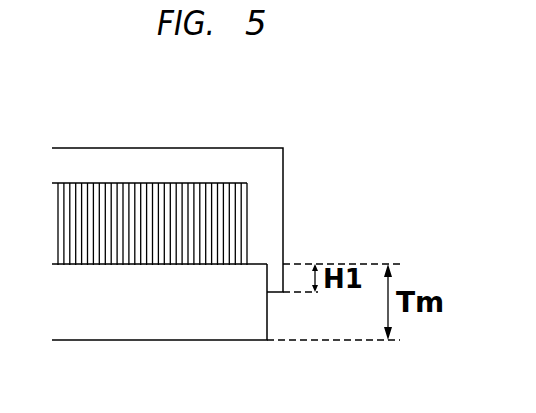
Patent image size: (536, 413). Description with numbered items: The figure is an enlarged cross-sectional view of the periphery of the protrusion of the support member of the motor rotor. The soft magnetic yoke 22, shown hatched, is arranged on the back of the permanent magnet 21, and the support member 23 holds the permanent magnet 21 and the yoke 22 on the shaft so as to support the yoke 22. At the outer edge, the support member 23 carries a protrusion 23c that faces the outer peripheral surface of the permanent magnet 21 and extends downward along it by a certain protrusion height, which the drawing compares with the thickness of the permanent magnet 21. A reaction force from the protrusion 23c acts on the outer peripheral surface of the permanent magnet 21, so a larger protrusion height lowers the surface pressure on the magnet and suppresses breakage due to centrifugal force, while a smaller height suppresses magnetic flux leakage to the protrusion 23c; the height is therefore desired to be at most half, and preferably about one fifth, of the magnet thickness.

The permanent magnet 21 is at (135, 320).
The yoke 22 is at (105, 197).
The support member 23 is at (257, 175).
The protrusion 23c is at (268, 282).